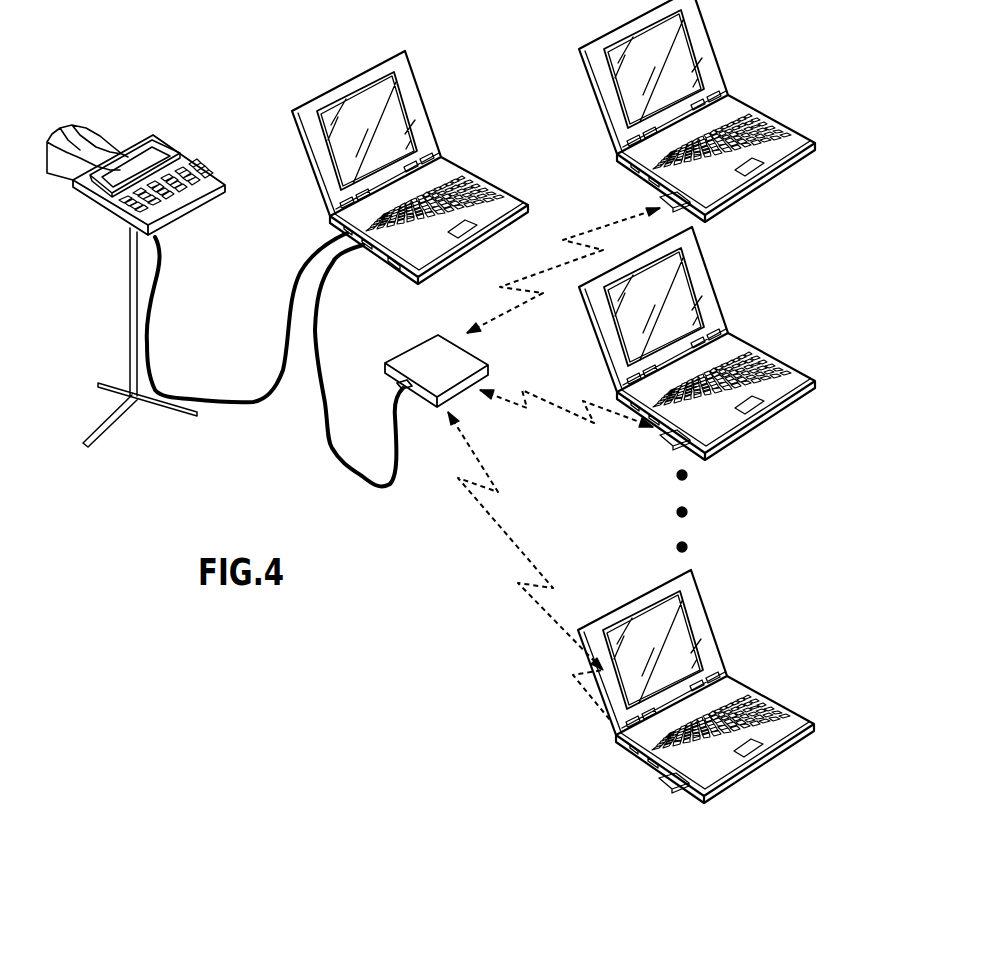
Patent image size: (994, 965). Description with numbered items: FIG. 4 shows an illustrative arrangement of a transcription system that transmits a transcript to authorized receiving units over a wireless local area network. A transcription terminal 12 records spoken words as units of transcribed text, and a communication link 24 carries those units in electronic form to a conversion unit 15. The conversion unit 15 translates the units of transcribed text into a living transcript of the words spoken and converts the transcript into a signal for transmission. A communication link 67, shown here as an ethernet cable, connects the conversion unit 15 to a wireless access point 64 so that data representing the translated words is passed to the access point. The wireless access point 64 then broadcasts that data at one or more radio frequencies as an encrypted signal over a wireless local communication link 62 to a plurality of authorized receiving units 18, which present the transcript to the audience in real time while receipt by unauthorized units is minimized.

The transcription terminal 12 is at (204, 172).
The conversion unit 15 is at (309, 160).
The authorized receiving unit 18 is at (777, 172).
The communication link 24 is at (262, 395).
The wireless local communication link 62 is at (562, 265).
The wireless access point 64 is at (422, 358).
The communication link 67 is at (326, 382).